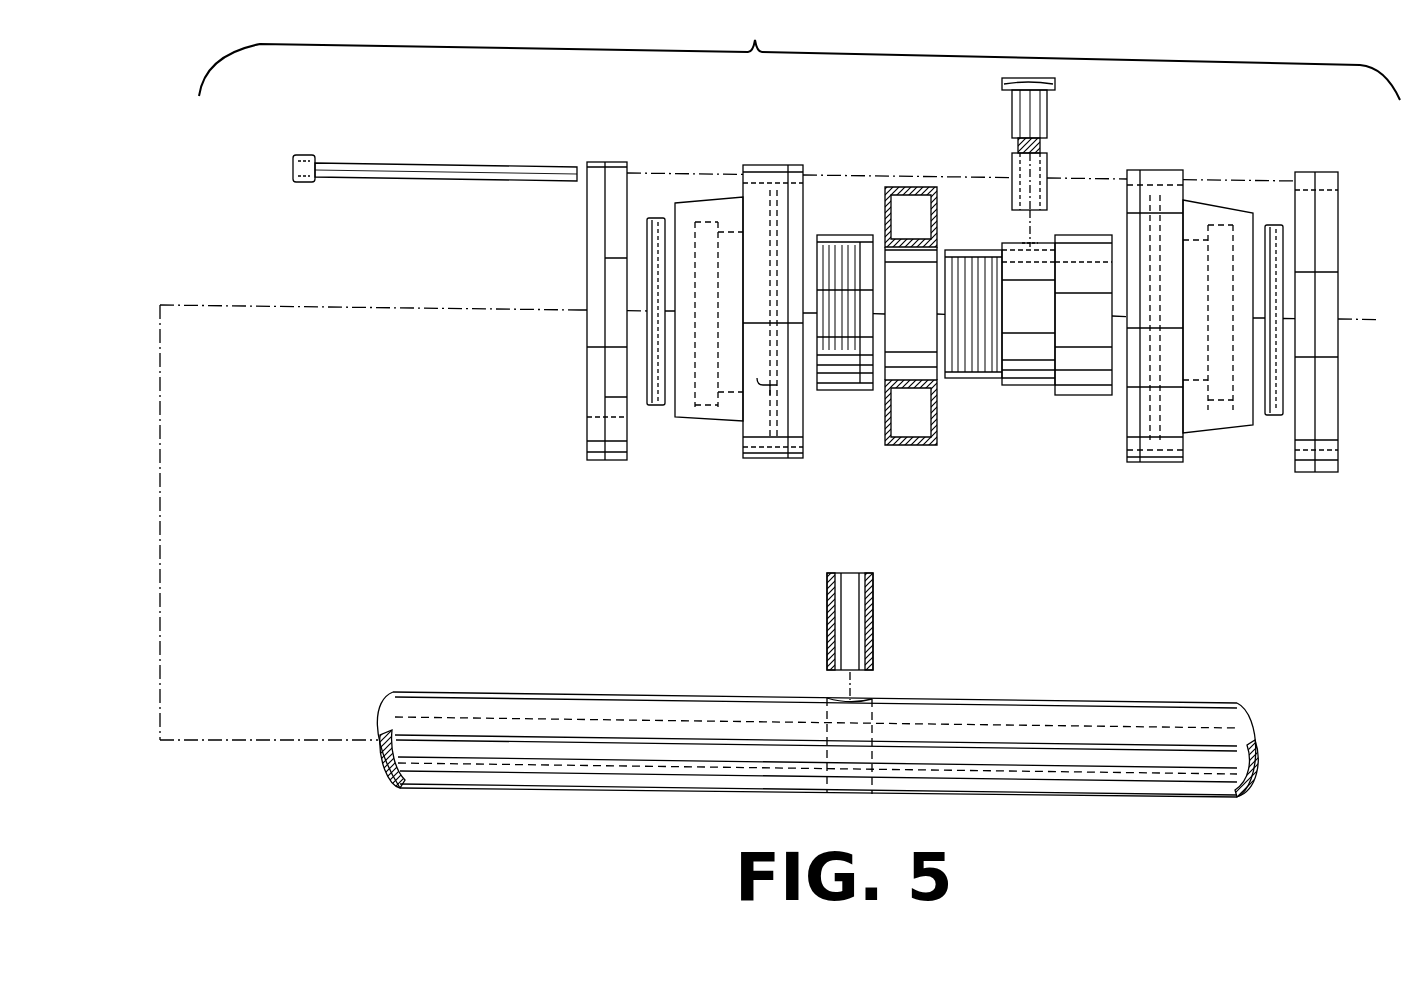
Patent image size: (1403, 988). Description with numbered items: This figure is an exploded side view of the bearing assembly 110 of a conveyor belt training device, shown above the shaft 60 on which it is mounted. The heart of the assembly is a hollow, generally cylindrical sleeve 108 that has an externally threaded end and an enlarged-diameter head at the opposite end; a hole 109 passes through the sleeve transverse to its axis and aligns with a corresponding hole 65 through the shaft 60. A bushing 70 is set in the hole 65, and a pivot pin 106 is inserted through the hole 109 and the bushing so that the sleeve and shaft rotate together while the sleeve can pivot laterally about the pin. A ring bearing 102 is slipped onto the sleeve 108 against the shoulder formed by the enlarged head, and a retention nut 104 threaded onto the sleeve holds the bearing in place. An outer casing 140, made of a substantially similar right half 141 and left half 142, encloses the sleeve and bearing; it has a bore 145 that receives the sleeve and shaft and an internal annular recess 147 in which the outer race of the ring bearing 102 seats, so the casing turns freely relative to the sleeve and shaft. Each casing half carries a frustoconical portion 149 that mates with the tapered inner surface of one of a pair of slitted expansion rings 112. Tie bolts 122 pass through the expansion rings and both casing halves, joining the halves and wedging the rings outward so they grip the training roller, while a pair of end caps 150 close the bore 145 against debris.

The shaft 60 is at (650, 708).
The hole 65 is at (848, 712).
The bushing 70 is at (875, 592).
The ring bearing 102 is at (905, 187).
The retention nut 104 is at (843, 236).
The pivot pin 106 is at (1047, 128).
The sleeve 108 is at (1095, 240).
The hole 109 is at (1020, 247).
The bearing assembly 110 is at (799, 53).
The expansion rings 112 is at (587, 430).
The tie bolts 122 is at (490, 165).
The outer casing 140 is at (1185, 171).
The right half 141 is at (1160, 463).
The left half 142 is at (772, 460).
The bore 145 is at (805, 385).
The internal annular recess 147 is at (800, 200).
The frustoconical portion 149 is at (717, 420).
The end caps 150 is at (655, 218).